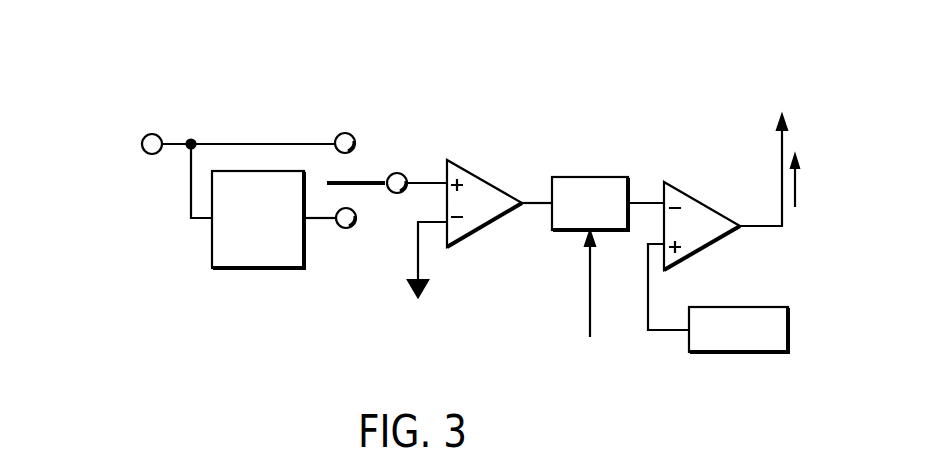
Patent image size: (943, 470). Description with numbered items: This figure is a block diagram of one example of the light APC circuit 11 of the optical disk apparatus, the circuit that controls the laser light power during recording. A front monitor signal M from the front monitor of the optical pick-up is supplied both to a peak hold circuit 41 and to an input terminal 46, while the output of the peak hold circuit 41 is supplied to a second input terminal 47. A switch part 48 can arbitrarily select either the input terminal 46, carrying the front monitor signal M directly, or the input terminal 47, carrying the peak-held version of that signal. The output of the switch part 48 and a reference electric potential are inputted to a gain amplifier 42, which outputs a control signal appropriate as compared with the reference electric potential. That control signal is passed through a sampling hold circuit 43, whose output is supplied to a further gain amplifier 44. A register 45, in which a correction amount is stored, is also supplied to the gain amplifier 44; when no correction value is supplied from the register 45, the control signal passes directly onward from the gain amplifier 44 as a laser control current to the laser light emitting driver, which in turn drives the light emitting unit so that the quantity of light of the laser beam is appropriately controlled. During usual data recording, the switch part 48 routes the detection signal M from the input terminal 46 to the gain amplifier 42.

The light APC circuit 11 is at (541, 117).
The peak hold circuit 41 is at (257, 268).
The gain amplifier 42 is at (480, 235).
The sampling hold circuit 43 is at (585, 177).
The gain amplifier 44 is at (705, 200).
The register 45 is at (745, 307).
The input terminal 46 is at (345, 133).
The input terminal 47 is at (346, 228).
The switch part 48 is at (382, 152).